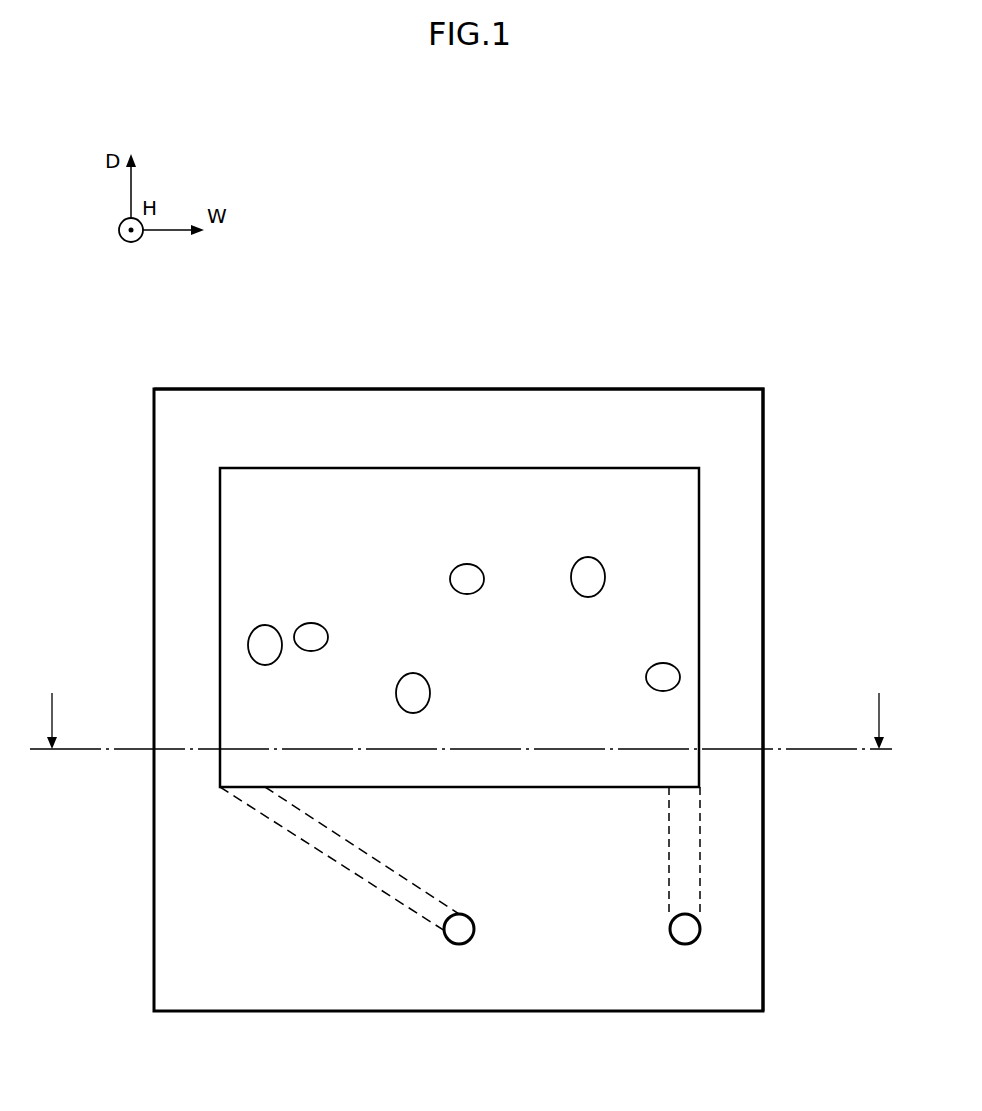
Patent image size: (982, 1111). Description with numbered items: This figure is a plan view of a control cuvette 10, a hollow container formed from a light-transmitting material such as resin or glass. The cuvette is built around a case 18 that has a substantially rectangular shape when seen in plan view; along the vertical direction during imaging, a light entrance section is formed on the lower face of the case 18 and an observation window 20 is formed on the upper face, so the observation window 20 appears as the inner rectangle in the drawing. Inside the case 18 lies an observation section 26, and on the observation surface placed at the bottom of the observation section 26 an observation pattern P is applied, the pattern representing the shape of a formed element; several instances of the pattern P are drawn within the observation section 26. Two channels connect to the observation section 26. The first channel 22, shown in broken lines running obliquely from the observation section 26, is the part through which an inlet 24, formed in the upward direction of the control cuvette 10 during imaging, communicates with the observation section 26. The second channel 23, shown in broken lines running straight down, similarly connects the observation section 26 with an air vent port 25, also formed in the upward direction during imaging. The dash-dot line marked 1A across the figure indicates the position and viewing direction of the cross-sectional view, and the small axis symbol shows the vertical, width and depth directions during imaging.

The control cuvette 10 is at (484, 389).
The case 18 is at (652, 389).
The observation window 20 is at (220, 541).
The observation section 26 is at (247, 603).
The observation pattern P is at (310, 620).
The 1A-1A line 1A is at (463, 719).
The first channel 22 is at (310, 838).
The second channel 23 is at (669, 828).
The inlet 24 is at (445, 929).
The air vent port 25 is at (675, 933).